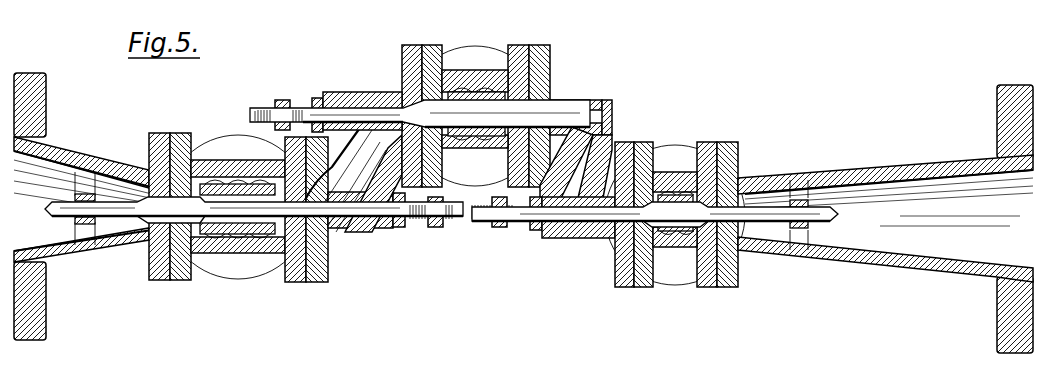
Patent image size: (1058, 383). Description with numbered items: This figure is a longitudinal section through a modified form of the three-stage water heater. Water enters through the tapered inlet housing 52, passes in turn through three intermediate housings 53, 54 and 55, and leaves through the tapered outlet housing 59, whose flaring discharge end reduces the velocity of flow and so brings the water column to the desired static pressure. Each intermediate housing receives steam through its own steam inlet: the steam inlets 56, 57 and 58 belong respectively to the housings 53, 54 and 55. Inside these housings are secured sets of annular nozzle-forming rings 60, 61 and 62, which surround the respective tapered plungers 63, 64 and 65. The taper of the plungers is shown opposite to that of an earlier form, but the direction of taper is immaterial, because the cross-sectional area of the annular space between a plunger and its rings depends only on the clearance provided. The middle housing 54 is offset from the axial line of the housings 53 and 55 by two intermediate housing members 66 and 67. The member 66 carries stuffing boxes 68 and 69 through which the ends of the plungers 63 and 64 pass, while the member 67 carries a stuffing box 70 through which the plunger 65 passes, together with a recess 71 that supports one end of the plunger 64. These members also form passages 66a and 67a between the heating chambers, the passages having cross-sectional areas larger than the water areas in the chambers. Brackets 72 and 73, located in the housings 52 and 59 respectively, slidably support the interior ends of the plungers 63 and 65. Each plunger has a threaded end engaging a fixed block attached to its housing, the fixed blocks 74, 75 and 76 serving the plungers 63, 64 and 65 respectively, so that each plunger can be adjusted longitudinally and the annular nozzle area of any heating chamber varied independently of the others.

The tapered inlet housing 52 is at (80, 153).
The intermediate housing 53 is at (300, 283).
The intermediate housing 54 is at (517, 52).
The intermediate housing 55 is at (710, 143).
The steam inlet 56 is at (245, 254).
The steam inlet 57 is at (478, 92).
The steam inlet 58 is at (672, 194).
The tapered outlet housing 59 is at (906, 172).
The annular nozzle-forming rings 60 is at (232, 183).
The annular nozzle-forming rings 61 is at (458, 90).
The annular nozzle-forming rings 62 is at (676, 248).
The tapered plunger 63 is at (150, 250).
The tapered plunger 64 is at (402, 82).
The tapered plunger 65 is at (612, 242).
The intermediate housing member 66 is at (360, 236).
The passage 66a is at (355, 192).
The intermediate housing member 67 is at (557, 239).
The passage 67a is at (605, 150).
The stuffing box 68 is at (328, 96).
The stuffing box 69 is at (398, 228).
The stuffing box 70 is at (536, 231).
The recess 71 is at (600, 102).
The bracket 72 is at (85, 224).
The bracket 73 is at (798, 232).
The fixed block 74 is at (434, 228).
The fixed block 75 is at (281, 99).
The fixed block 76 is at (498, 228).